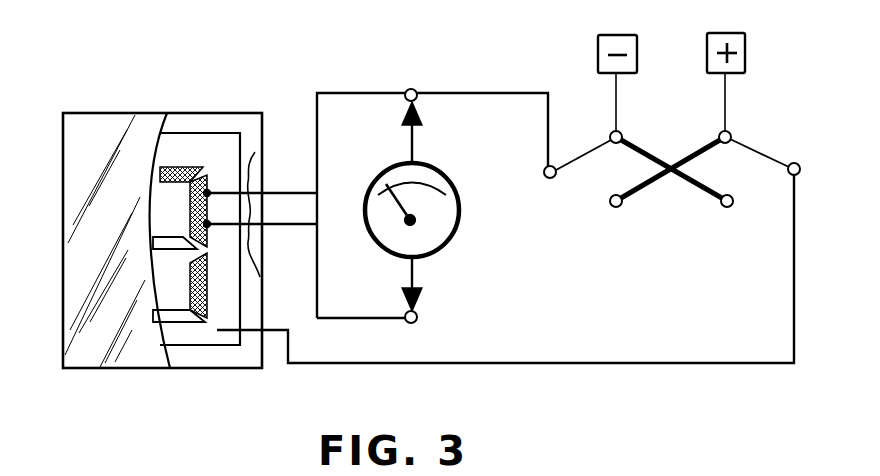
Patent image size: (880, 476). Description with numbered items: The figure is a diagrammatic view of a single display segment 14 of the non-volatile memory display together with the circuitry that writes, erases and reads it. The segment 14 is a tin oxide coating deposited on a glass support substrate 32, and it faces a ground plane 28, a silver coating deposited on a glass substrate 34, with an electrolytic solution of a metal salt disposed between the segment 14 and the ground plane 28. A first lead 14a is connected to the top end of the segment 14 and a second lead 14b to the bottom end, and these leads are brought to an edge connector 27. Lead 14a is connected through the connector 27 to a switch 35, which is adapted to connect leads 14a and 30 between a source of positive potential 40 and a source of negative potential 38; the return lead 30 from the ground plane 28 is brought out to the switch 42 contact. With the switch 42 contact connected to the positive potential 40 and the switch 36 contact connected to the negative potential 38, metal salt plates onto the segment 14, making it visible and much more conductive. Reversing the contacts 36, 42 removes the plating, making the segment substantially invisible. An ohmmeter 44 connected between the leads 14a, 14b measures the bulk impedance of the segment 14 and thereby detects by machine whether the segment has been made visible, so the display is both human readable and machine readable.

The display segment 14 is at (190, 212).
The first lead 14a is at (278, 191).
The second lead 14b is at (287, 229).
The edge connector 27 is at (261, 210).
The ground plane 28 is at (218, 329).
The lead 30 is at (301, 366).
The glass support substrate 32 is at (139, 137).
The glass substrate 34 is at (180, 355).
The switch 35 is at (669, 222).
The switch contact 36 is at (592, 160).
The source of negative potential 38 is at (598, 50).
The source of positive potential 40 is at (746, 45).
The switch contact 42 is at (766, 157).
The ohmmeter 44 is at (446, 253).